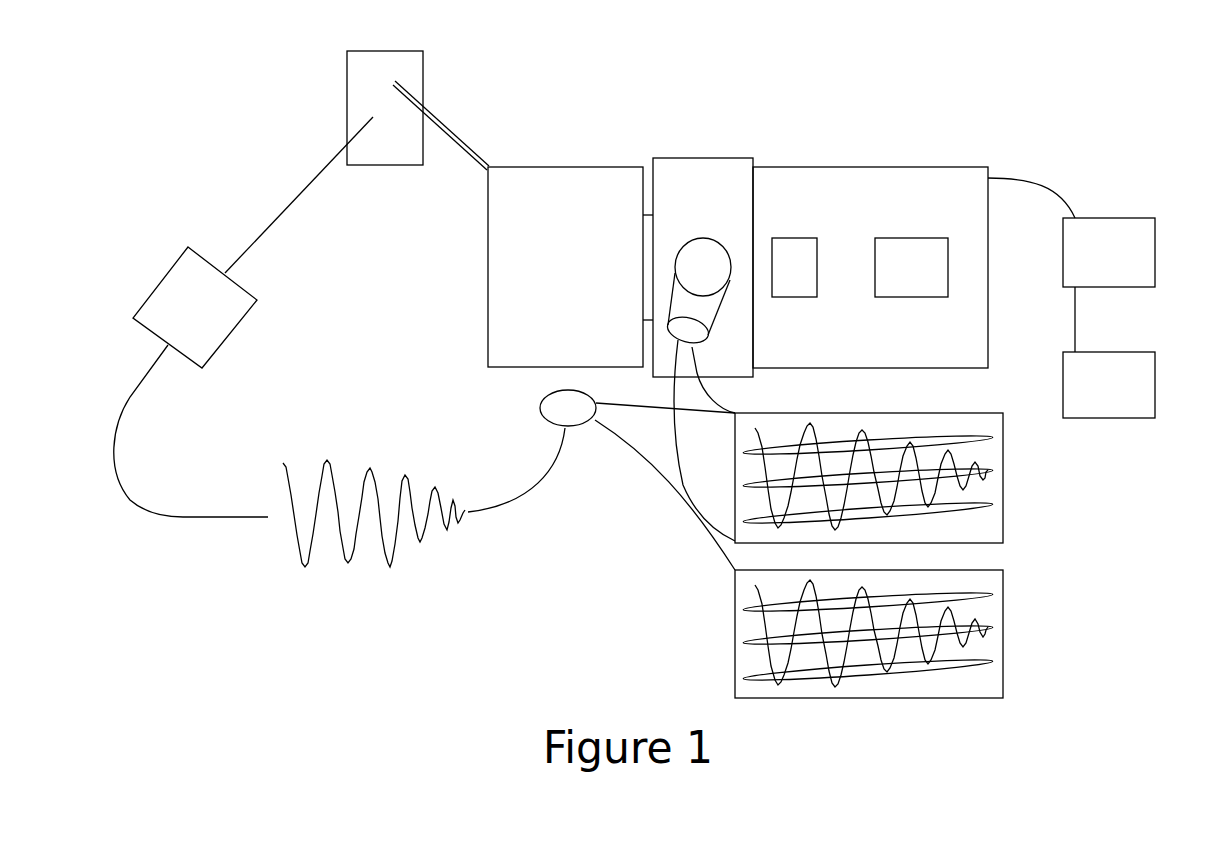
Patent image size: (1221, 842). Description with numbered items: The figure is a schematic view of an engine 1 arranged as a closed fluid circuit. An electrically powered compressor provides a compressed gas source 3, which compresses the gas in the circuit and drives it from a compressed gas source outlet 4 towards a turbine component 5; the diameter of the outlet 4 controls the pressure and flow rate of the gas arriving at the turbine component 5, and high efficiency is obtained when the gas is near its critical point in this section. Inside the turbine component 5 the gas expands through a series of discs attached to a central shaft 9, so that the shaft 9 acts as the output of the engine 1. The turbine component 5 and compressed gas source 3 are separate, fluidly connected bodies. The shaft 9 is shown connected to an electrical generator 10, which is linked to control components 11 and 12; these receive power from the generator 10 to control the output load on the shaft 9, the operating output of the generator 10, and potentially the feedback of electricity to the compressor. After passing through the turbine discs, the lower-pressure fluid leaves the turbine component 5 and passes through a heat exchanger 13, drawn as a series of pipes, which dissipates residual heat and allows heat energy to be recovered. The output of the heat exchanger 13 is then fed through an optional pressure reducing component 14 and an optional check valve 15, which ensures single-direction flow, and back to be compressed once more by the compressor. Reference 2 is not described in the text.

The engine 1 is at (196, 116).
The signal path / connection 2 is at (212, 518).
The compressed gas source 3 is at (347, 63).
The compressed gas source outlet 4 is at (467, 165).
The turbine component 5 is at (488, 250).
The central shaft 9 is at (798, 237).
The electrical generator 10 is at (925, 238).
The control component 11 is at (1158, 228).
The control component 12 is at (1158, 362).
The heat exchanger 13 is at (1005, 527).
The pressure reducing component 14 is at (389, 568).
The check valve 15 is at (215, 350).